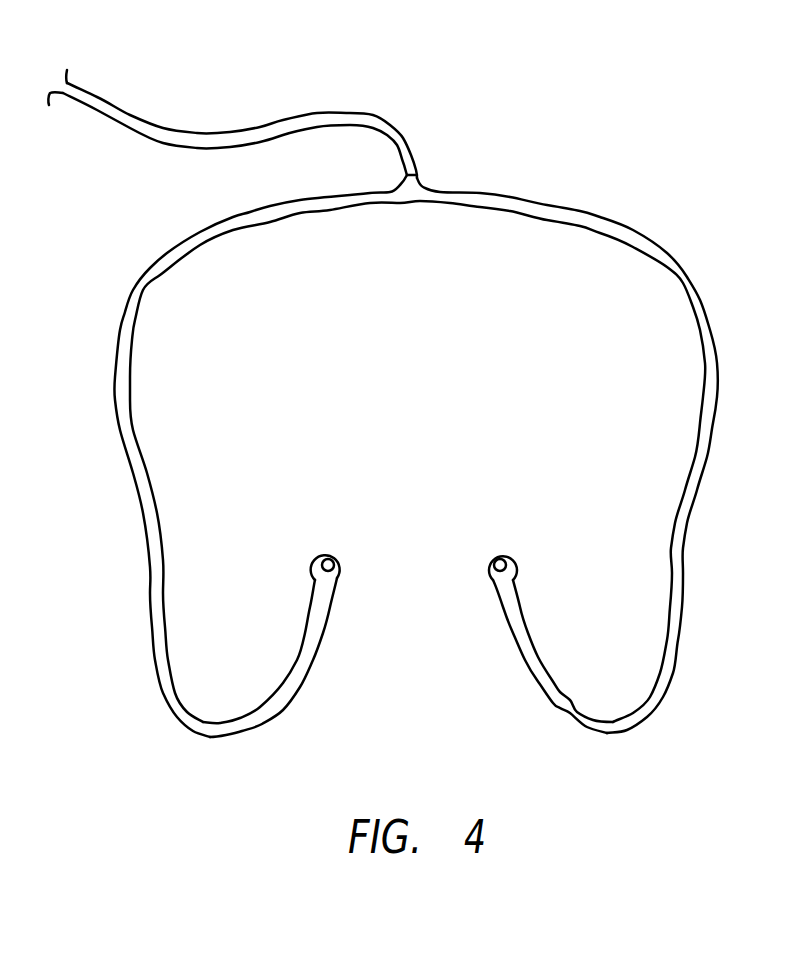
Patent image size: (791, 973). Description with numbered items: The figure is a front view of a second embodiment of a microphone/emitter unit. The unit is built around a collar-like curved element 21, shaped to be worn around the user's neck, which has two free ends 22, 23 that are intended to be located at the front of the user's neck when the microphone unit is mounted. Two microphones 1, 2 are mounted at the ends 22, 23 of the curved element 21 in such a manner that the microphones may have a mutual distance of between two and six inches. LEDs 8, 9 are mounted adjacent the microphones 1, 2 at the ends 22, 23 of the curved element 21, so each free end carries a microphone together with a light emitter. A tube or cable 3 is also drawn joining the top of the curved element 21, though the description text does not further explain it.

The supply tube 3 is at (277, 128).
The collar-like curved element 21 is at (125, 313).
The free end 22 is at (339, 581).
The free end 23 is at (491, 582).
The microphone 1 is at (330, 550).
The microphone 2 is at (498, 551).
The LED 8 is at (320, 563).
The LED 9 is at (510, 563).